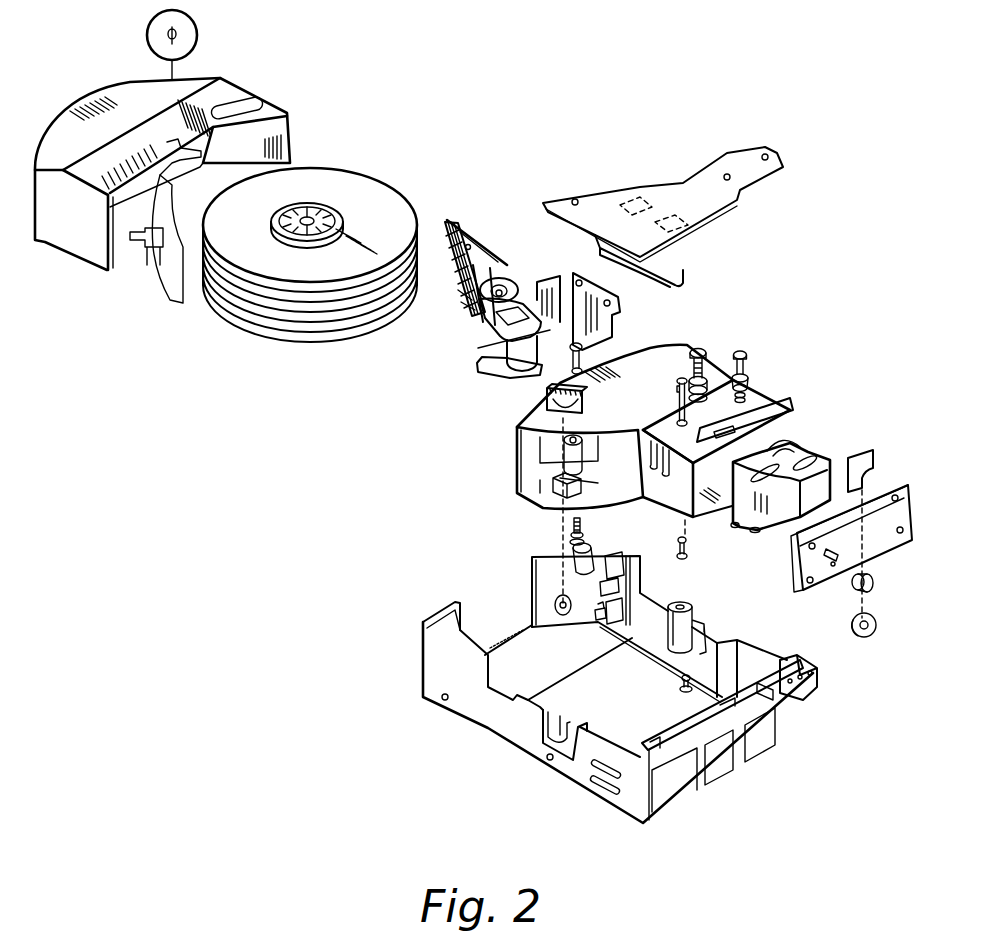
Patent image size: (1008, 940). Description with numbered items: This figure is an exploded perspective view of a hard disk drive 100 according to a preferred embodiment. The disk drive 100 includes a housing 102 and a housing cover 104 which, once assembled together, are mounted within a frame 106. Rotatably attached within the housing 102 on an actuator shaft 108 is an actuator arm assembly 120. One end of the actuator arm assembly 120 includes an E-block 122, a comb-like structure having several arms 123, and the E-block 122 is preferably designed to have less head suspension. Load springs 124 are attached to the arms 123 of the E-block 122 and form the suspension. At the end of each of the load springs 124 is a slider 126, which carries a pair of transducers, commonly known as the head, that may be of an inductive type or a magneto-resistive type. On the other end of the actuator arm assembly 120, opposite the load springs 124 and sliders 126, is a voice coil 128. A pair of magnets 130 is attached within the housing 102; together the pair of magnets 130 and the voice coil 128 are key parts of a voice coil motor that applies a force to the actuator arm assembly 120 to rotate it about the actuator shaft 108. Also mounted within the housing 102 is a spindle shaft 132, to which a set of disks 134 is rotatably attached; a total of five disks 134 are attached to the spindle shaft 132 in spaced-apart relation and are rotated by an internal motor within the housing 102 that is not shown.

The disk drive 100 is at (422, 156).
The housing 102 is at (672, 353).
The housing cover 104 is at (86, 240).
The frame 106 is at (490, 730).
The actuator shaft 108 is at (502, 280).
The actuator arm assembly 120 is at (457, 378).
The E-block 122 is at (451, 298).
The arms 123 is at (473, 252).
The load springs 124 is at (455, 232).
The slider 126 is at (448, 222).
The voice coil 128 is at (527, 406).
The pair of magnets 130 is at (807, 450).
The spindle shaft 132 is at (305, 205).
The disks 134 is at (275, 322).